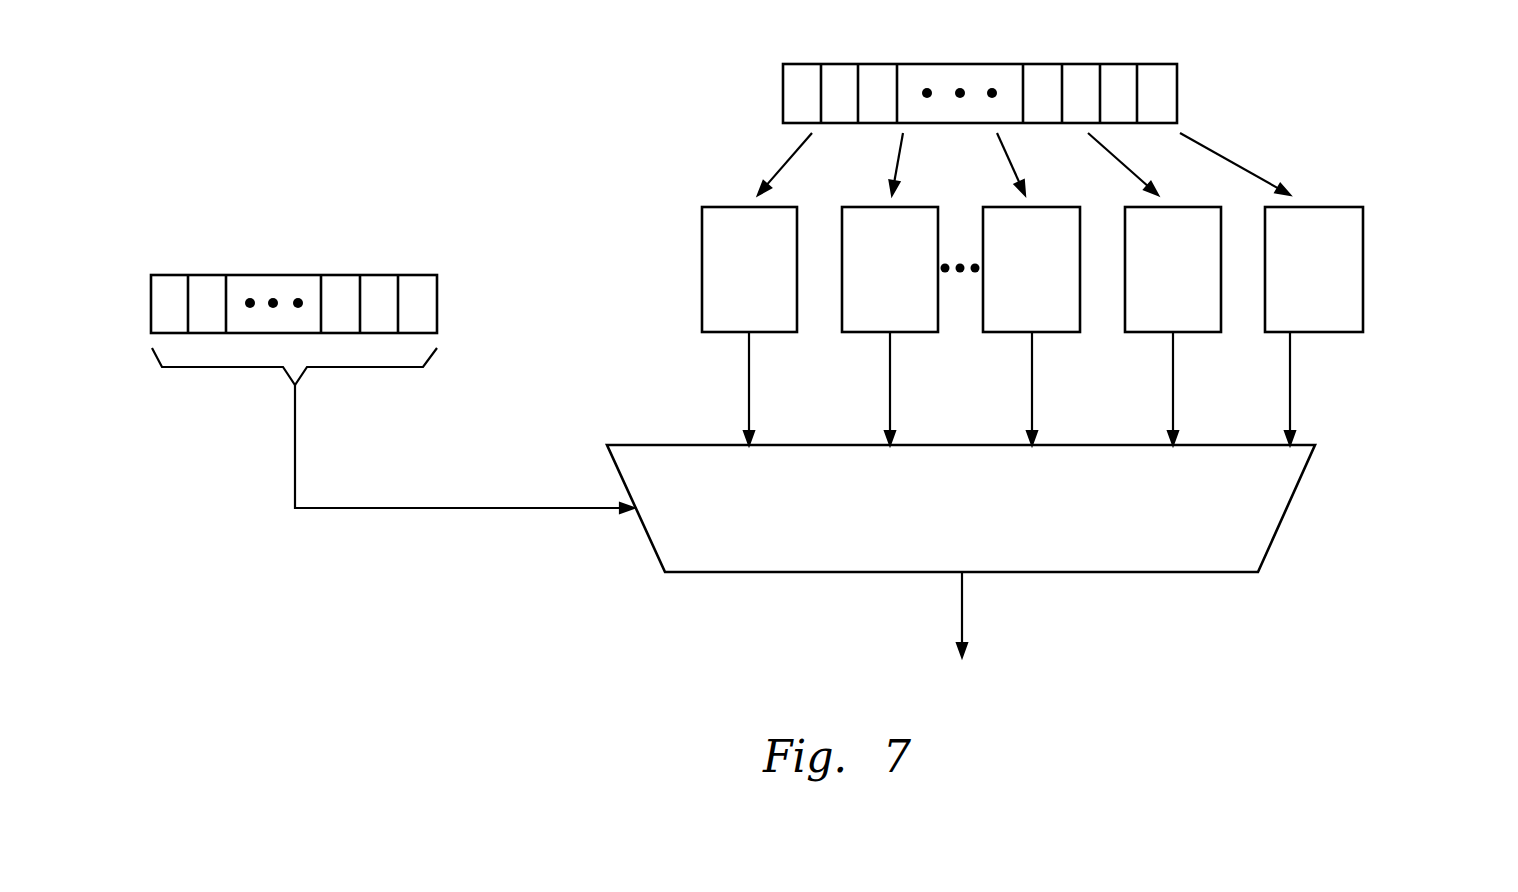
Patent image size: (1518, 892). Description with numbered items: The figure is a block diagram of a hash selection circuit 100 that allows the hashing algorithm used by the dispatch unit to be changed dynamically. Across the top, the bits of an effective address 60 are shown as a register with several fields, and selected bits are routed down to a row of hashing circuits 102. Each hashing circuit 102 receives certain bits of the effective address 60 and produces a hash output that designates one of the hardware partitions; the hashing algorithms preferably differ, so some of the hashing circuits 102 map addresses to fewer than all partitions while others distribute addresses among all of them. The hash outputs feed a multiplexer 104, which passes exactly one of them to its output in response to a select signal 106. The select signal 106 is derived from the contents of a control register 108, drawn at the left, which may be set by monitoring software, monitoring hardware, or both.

The hash selection circuit 100 is at (452, 99).
The effective address 60 is at (997, 64).
The hashing circuits 102 is at (780, 283).
The multiplexer 104 is at (1270, 490).
The select signal 106 is at (463, 508).
The control register 108 is at (293, 275).